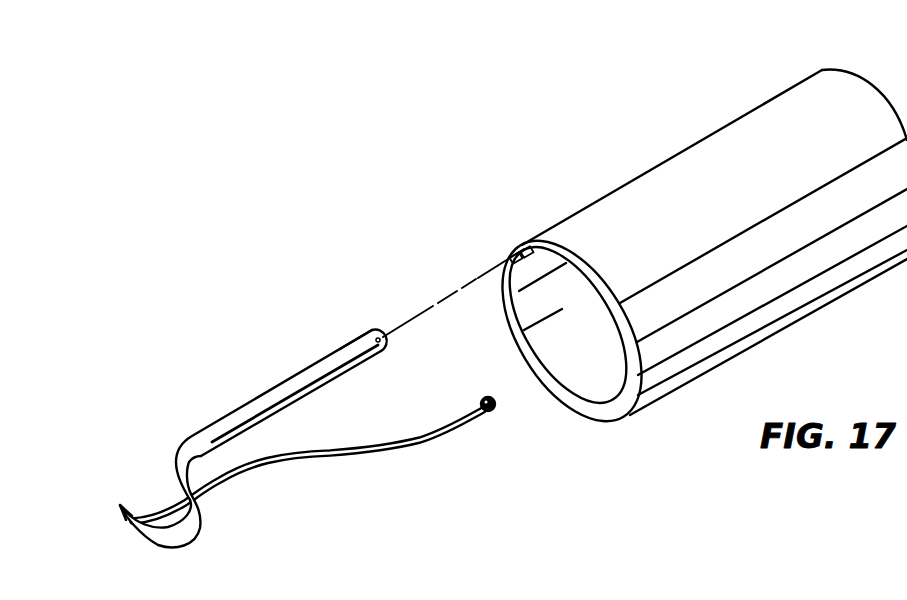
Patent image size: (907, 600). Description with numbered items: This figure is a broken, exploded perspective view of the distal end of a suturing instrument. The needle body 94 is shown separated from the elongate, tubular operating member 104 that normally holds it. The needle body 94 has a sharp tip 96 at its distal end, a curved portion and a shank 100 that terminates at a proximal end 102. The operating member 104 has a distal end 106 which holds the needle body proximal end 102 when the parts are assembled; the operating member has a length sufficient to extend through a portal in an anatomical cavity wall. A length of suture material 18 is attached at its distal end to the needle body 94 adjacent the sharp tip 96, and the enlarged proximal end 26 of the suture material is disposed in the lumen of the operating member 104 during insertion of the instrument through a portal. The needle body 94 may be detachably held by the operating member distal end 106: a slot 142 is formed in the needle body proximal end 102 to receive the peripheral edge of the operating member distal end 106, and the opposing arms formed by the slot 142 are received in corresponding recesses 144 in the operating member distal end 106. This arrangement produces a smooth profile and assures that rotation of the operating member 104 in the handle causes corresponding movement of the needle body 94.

The length of suture material 18 is at (369, 458).
The enlarged proximal end 26 is at (495, 411).
The needle body 94 is at (209, 515).
The sharp tip 96 is at (121, 508).
The shank 100 is at (246, 404).
The proximal end 102 is at (370, 335).
The tubular operating member 104 is at (763, 98).
The distal end 106 is at (622, 417).
The slot 142 is at (380, 350).
The recesses 144 is at (519, 246).